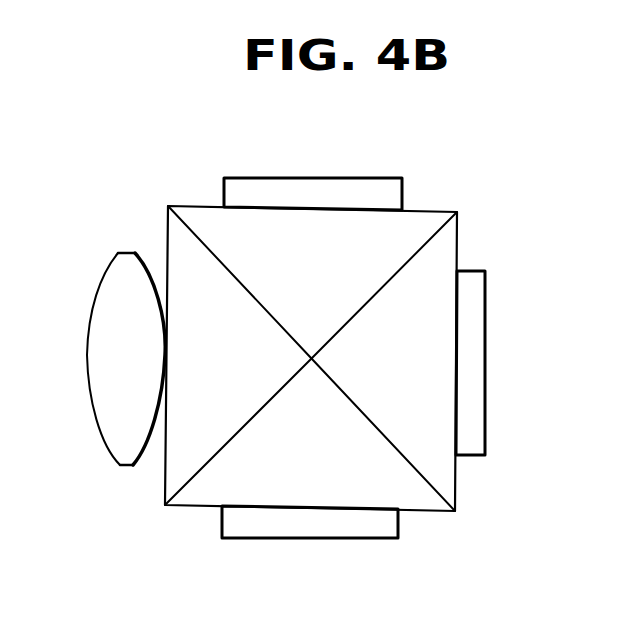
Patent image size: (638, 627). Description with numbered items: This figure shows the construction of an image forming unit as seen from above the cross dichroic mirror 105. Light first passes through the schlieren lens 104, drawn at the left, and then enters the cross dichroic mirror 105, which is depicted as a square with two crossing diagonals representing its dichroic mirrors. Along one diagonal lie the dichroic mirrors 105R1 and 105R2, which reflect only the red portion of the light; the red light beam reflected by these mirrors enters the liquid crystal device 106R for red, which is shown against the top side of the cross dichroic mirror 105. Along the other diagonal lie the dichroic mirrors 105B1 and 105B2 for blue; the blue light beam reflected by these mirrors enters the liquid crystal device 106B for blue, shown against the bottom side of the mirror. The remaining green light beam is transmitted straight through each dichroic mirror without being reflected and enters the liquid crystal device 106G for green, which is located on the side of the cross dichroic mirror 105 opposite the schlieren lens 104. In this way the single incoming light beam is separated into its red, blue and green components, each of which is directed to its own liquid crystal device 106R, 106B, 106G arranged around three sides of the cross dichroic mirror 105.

The schlieren lens 104 is at (98, 297).
The cross dichroic mirror 105 is at (443, 211).
The dichroic mirror for blue 105B1 is at (192, 226).
The dichroic mirror for blue 105B2 is at (438, 488).
The dichroic mirror for red 105R1 is at (182, 491).
The dichroic mirror for red 105R2 is at (428, 243).
The liquid crystal device for red 106R is at (327, 177).
The liquid crystal device for green 106G is at (487, 325).
The liquid crystal device for blue 106B is at (302, 540).